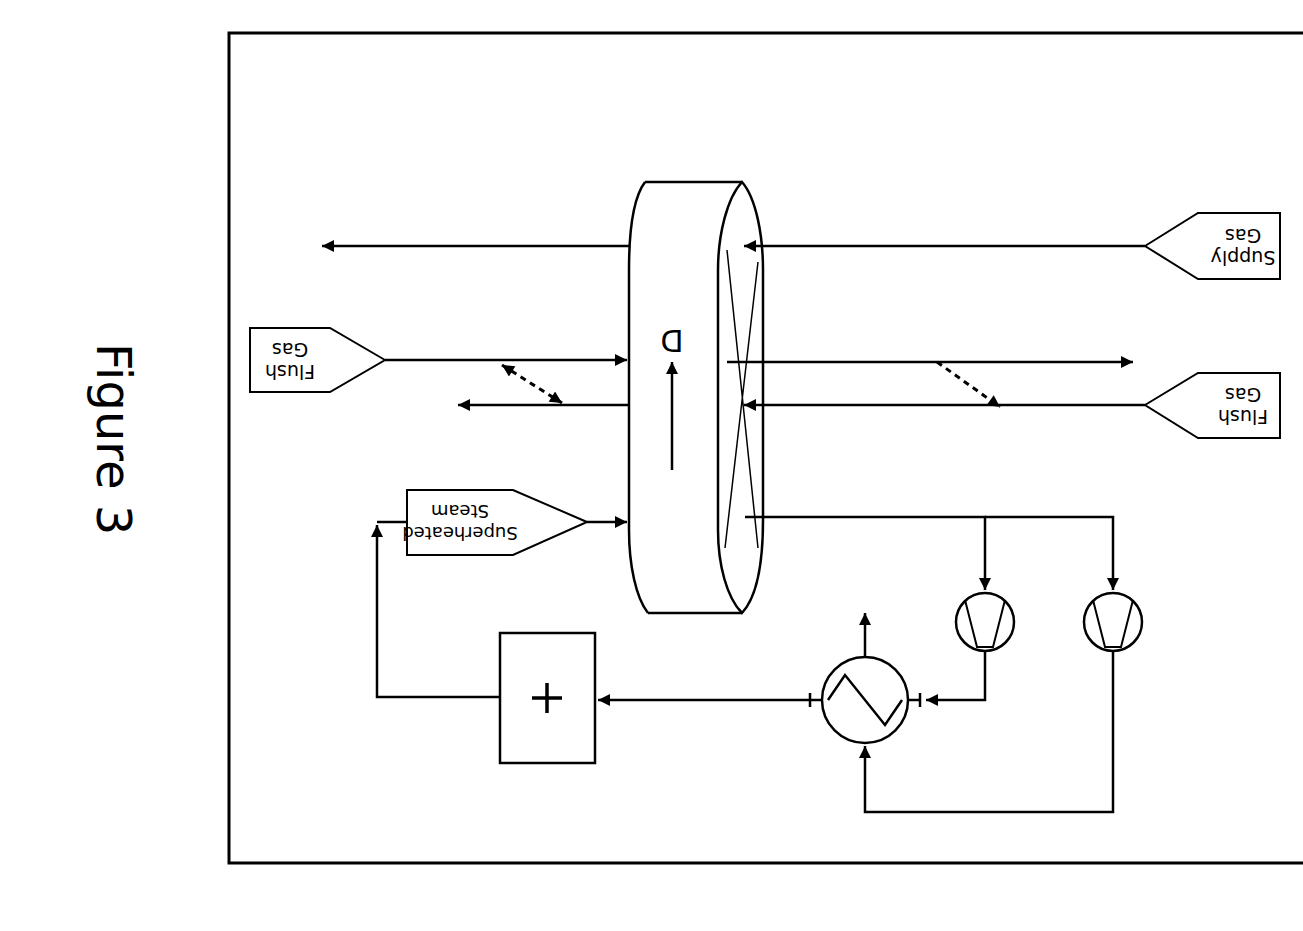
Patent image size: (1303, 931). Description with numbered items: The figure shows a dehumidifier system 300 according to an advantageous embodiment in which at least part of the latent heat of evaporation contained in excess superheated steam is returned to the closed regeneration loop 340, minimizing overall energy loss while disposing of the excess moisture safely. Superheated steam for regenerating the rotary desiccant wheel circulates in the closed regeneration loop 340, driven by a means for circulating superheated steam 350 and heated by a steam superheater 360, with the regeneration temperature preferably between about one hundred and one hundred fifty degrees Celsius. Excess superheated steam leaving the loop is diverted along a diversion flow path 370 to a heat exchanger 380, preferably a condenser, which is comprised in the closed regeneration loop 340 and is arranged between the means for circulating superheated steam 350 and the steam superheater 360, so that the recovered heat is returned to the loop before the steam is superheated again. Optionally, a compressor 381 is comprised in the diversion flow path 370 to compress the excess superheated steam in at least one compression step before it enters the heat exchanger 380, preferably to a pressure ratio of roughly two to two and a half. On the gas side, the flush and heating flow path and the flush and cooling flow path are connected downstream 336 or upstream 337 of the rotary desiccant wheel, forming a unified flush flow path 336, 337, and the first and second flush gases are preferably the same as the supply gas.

The dehumidifier system 300 is at (766, 448).
The downstream connection of flush flow paths 336 is at (527, 393).
The upstream connection of flush flow paths 337 is at (972, 370).
The closed regeneration loop 340 is at (883, 512).
The means for circulating superheated steam 350 is at (955, 603).
The steam superheater 360 is at (486, 642).
The diversion flow path 370 is at (1043, 512).
The heat exchanger 380 is at (828, 740).
The compressor 381 is at (1145, 650).